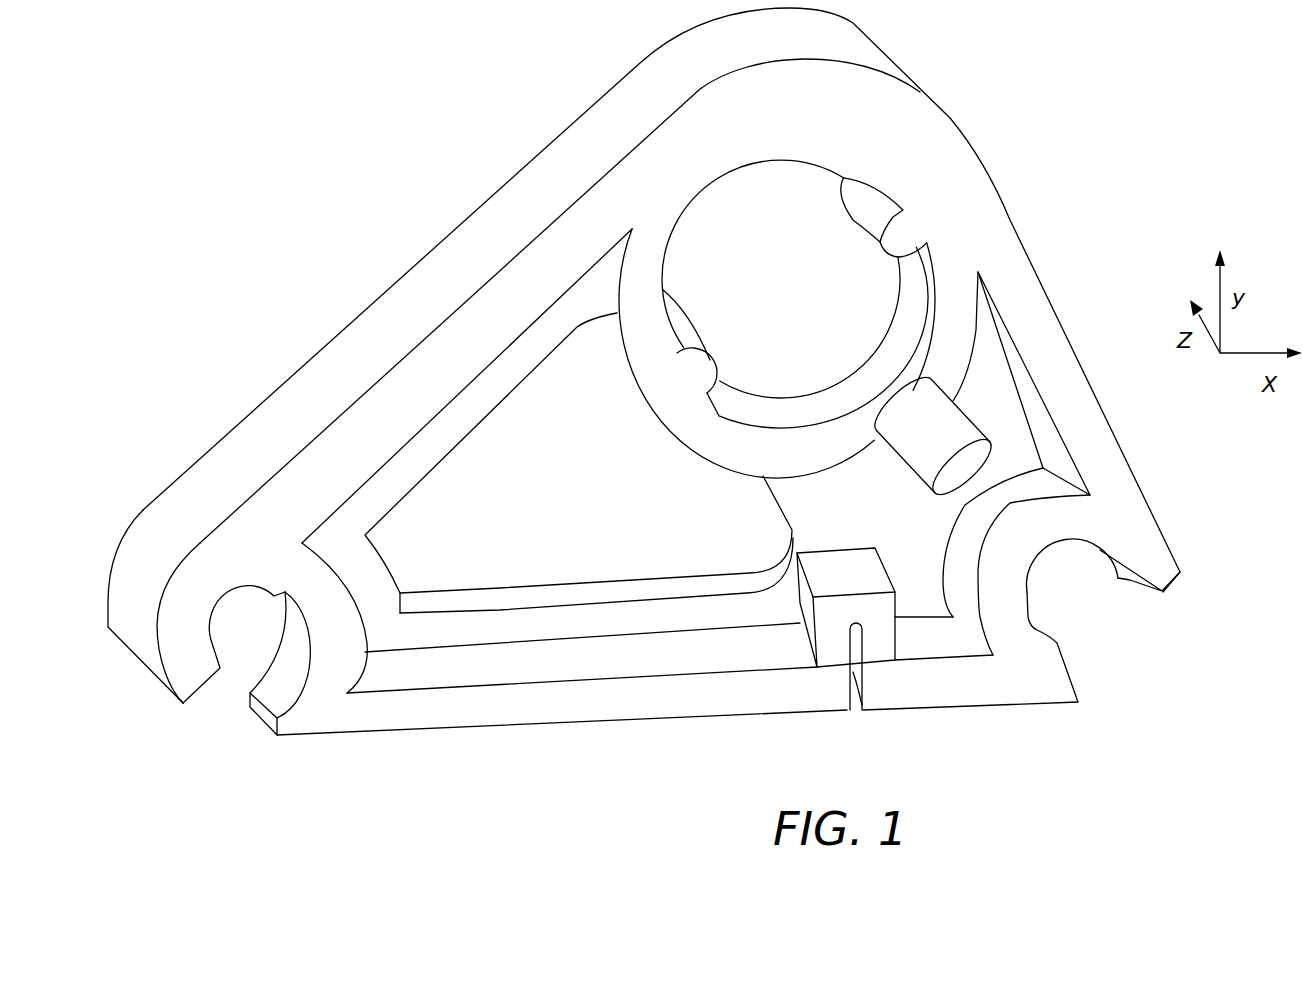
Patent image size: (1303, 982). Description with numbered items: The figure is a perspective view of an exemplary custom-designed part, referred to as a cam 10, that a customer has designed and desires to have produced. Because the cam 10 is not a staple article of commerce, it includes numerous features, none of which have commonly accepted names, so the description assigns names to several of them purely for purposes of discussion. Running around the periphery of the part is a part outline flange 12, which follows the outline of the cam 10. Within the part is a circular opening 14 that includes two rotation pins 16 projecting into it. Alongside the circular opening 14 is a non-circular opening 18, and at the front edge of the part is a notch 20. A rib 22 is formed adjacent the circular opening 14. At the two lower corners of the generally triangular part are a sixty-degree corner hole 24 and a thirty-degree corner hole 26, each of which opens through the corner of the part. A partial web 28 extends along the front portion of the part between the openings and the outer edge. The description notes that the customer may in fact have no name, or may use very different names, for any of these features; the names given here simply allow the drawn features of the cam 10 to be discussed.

The cam part 10 is at (331, 167).
The part outline flange 12 is at (405, 387).
The circular opening 14 is at (768, 240).
The rotation pins 16 is at (697, 372).
The non-circular opening 18 is at (556, 478).
The notch 20 is at (858, 668).
The rib 22 is at (940, 425).
The 60° corner hole 24 is at (1080, 607).
The 30° corner hole 26 is at (247, 653).
The partial web 28 is at (533, 622).